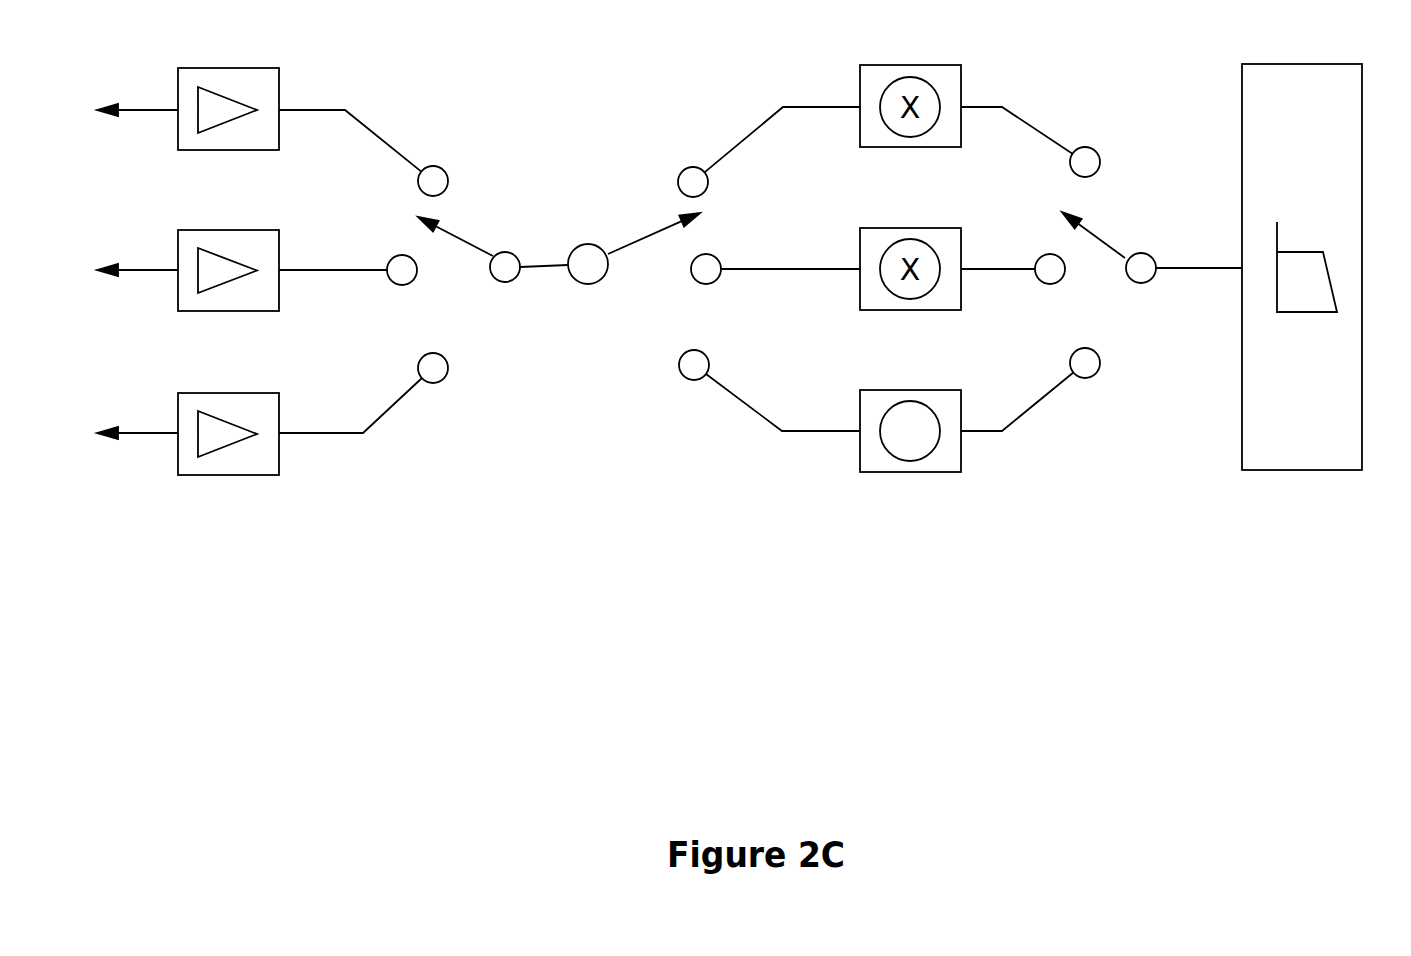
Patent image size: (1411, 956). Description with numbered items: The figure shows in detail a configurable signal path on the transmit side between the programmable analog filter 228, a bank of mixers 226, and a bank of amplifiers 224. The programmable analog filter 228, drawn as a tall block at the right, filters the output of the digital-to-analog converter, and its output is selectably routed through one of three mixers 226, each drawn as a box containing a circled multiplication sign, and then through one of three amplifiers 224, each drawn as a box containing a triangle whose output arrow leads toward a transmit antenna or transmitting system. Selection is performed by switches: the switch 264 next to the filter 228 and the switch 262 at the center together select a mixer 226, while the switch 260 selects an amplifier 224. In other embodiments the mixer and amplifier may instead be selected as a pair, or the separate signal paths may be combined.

The amplifier 224 is at (228, 475).
The mixer 226 is at (910, 473).
The programmable analog filter 228 is at (1302, 470).
The switch 260 is at (507, 250).
The switch 262 is at (590, 284).
The switch 264 is at (1141, 283).